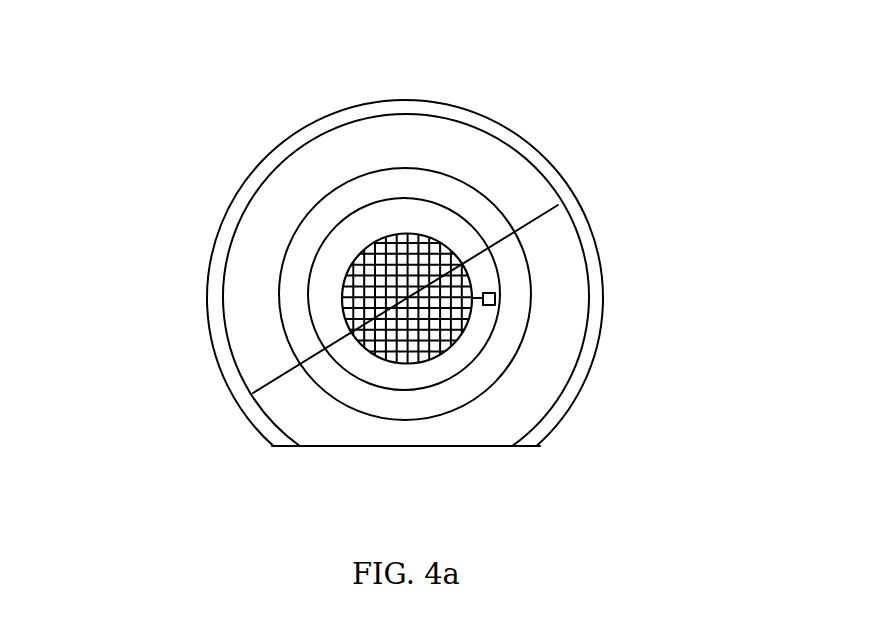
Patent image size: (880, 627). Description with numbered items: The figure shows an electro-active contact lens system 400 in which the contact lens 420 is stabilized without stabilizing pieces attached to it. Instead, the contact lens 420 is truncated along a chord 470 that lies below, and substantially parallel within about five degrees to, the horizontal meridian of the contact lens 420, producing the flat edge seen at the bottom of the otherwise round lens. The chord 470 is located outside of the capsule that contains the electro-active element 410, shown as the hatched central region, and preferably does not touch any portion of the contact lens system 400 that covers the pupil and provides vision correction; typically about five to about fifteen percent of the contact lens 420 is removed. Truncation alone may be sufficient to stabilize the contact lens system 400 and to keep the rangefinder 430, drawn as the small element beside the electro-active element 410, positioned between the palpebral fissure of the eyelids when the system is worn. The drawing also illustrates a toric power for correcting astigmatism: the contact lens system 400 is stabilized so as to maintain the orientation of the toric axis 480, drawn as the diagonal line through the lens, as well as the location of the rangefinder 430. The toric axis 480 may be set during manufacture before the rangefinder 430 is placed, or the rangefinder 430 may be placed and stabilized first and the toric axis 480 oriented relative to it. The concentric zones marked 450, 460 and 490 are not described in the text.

The contact lens system 400 is at (592, 133).
The electro-active element 410 is at (367, 351).
The contact lens 420 is at (247, 290).
The rangefinder 430 is at (495, 298).
The inner zone ring 450 is at (337, 273).
The outer ring 460 is at (467, 118).
The chord 470 is at (490, 447).
The toric axis 480 is at (290, 371).
The intermediate zone 490 is at (335, 210).